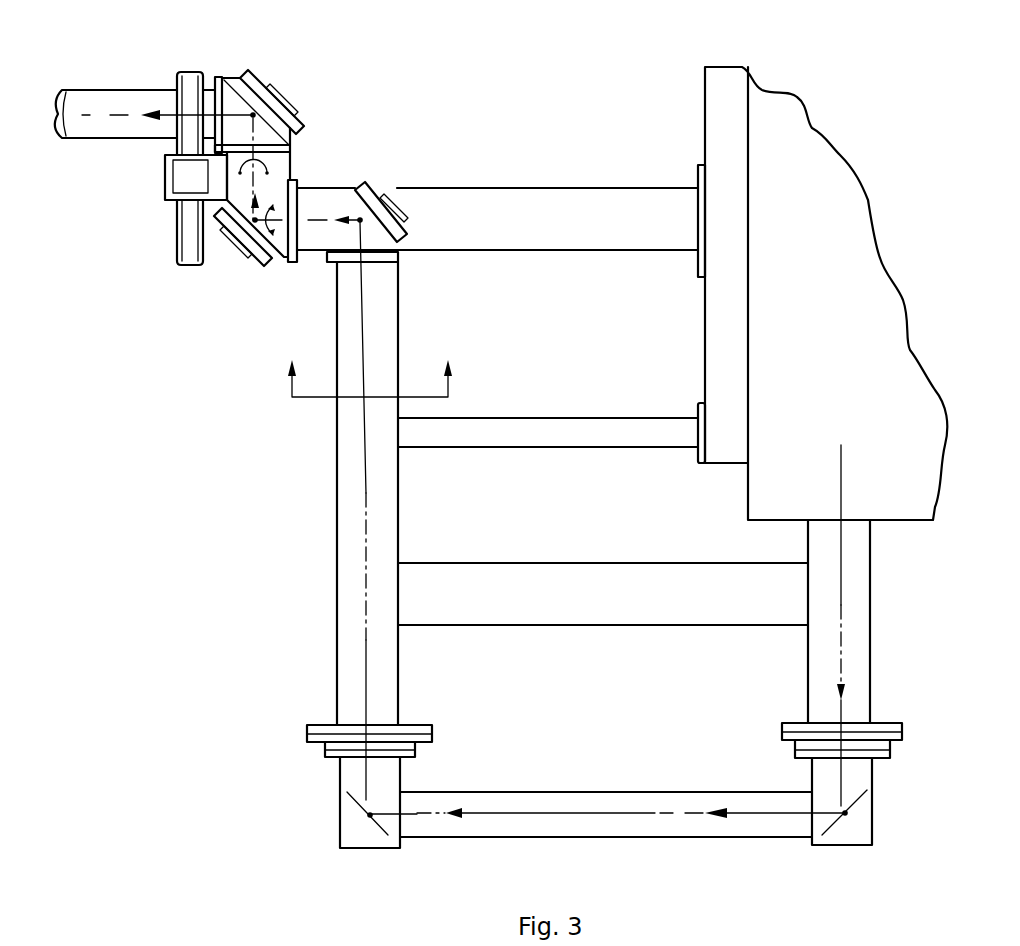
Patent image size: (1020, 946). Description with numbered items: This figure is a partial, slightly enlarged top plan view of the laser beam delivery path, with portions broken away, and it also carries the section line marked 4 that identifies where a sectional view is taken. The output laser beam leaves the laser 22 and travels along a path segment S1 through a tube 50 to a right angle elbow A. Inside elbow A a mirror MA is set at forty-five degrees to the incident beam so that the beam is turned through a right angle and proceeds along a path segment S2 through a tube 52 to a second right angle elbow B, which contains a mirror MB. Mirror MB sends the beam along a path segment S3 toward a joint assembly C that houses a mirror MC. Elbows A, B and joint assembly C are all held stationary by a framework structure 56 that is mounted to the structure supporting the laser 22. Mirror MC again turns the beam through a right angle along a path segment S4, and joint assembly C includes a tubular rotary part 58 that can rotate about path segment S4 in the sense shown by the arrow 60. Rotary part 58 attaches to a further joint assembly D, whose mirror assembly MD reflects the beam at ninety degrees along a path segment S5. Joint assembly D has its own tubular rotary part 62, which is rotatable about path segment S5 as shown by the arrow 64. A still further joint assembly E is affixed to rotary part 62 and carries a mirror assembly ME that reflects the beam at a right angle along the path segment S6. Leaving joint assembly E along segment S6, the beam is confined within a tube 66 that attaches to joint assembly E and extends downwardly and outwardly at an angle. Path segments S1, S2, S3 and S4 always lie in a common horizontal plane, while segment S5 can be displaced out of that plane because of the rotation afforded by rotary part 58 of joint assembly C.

The laser 22 is at (823, 155).
The tube 50 is at (872, 587).
The tube 52 is at (527, 792).
The framework structure 56 is at (552, 395).
The tubular rotary part 58 is at (297, 265).
The arrow 60 is at (283, 190).
The tubular rotary part 62 is at (228, 172).
The arrow 64 is at (265, 160).
The tube 66 is at (108, 88).
The right angle elbow A is at (828, 846).
The right angle elbow B is at (368, 850).
The joint assembly C is at (366, 192).
The joint assembly D is at (278, 258).
The joint assembly E is at (225, 77).
The mirror MA is at (850, 813).
The mirror MB is at (368, 816).
The mirror MC is at (396, 232).
The mirror assembly MD is at (250, 248).
The mirror assembly ME is at (262, 95).
The path segment S1 is at (842, 654).
The path segment S2 is at (624, 833).
The path segment S3 is at (368, 493).
The path segment S4 is at (315, 225).
The path segment S5 is at (255, 133).
The path segment S6 is at (92, 112).
The section line 4- 4 is at (364, 392).